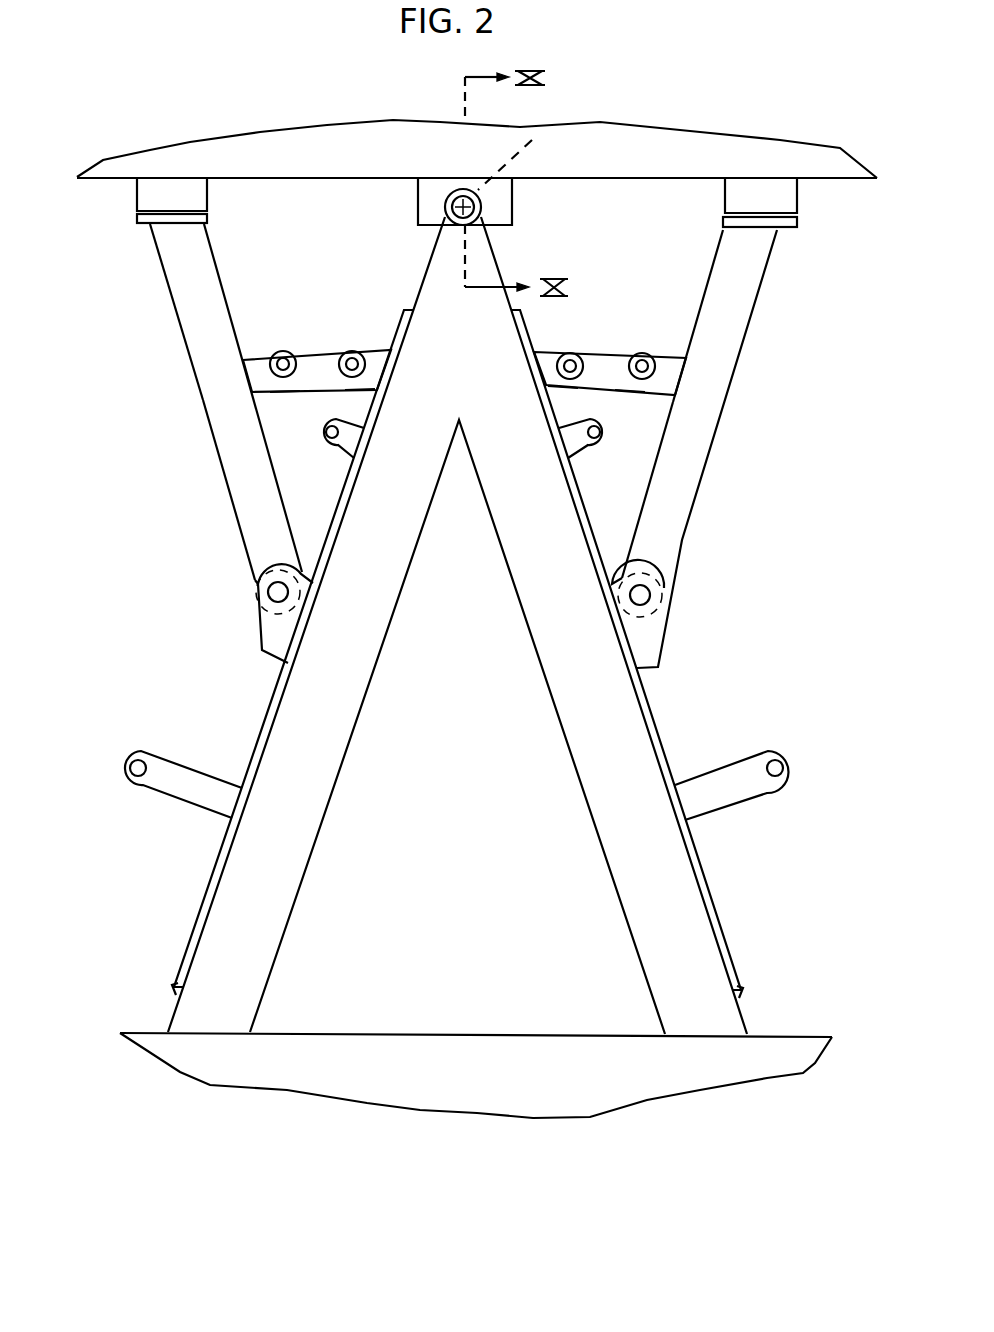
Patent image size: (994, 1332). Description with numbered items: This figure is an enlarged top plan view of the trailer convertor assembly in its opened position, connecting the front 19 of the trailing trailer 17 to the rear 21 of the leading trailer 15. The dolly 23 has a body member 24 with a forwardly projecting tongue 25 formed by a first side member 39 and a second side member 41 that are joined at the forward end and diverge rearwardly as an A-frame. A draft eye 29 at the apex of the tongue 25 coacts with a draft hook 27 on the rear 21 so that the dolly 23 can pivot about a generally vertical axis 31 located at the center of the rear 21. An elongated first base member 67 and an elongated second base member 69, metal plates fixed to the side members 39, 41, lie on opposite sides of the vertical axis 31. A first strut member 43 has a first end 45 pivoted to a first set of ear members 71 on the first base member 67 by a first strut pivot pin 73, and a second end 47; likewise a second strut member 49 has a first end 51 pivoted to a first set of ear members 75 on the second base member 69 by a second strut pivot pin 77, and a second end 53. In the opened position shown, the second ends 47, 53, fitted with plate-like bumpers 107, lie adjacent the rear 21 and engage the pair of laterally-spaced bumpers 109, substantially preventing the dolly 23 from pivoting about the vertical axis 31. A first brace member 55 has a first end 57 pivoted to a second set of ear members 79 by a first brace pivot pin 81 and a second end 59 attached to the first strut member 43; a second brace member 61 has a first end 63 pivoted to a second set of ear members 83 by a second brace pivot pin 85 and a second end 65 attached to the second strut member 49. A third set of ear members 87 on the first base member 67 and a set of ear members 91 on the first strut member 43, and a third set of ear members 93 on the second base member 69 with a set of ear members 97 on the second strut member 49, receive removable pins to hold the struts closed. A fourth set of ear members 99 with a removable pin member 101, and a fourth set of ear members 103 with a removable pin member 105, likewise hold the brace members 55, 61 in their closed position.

The leading trailer 15 is at (728, 145).
The trailing trailer 17 is at (647, 1102).
The front of the trailing trailer 19 is at (790, 1035).
The rear of the leading trailer 21 is at (830, 168).
The dolly 23 is at (780, 604).
The body member 24 is at (690, 902).
The tongue 25 is at (432, 252).
The draft hook 27 is at (498, 205).
The draft eye 29 is at (446, 215).
The vertical axis 31 is at (532, 140).
The first side member 39 is at (243, 857).
The second side member 41 is at (620, 745).
The first strut member 43 is at (215, 433).
The first end of the first strut member 45 is at (250, 550).
The second end of the first strut member 47 is at (165, 262).
The second strut member 49 is at (710, 410).
The first end of the second strut member 51 is at (670, 552).
The second end of the second strut member 53 is at (758, 268).
The first brace member 55 is at (312, 350).
The first end of the first brace member 57 is at (330, 350).
The second end of the first brace member 59 is at (300, 378).
The second brace member 61 is at (620, 350).
The first end of the second brace member 63 is at (588, 352).
The second end of the second brace member 65 is at (626, 386).
The first base member 67 is at (190, 943).
The second base member 69 is at (732, 968).
The first set of ear members 71 is at (280, 645).
The first strut pivot pin 73 is at (272, 592).
The first set of ear members 75 is at (647, 655).
The second strut pivot pin 77 is at (655, 600).
The second set of ear members 79 is at (364, 378).
The first brace pivot pin 81 is at (356, 352).
The second set of ear members 83 is at (548, 386).
The second brace pivot pin 85 is at (564, 352).
The third set of ear members 87 is at (158, 757).
The set of ear members 91 is at (265, 352).
The third set of ear members 93 is at (765, 786).
The set of ear members 97 is at (668, 358).
The fourth set of ear members 99 is at (338, 446).
The removable pin member 101 is at (284, 352).
The fourth set of ear members 103 is at (578, 452).
The removable pin member 105 is at (644, 352).
The bumper 107 is at (137, 220).
The bumpers 109 is at (152, 190).